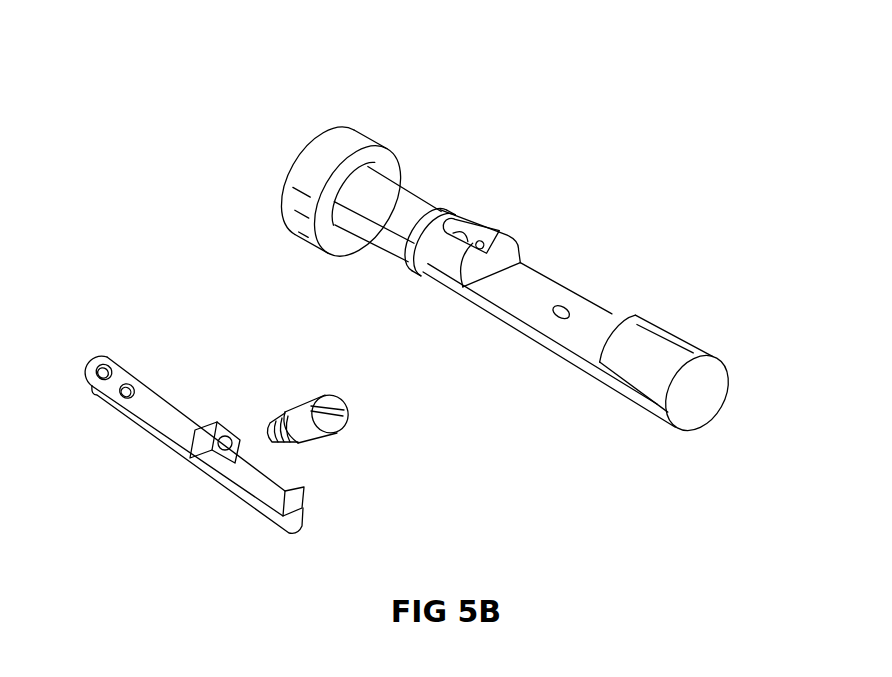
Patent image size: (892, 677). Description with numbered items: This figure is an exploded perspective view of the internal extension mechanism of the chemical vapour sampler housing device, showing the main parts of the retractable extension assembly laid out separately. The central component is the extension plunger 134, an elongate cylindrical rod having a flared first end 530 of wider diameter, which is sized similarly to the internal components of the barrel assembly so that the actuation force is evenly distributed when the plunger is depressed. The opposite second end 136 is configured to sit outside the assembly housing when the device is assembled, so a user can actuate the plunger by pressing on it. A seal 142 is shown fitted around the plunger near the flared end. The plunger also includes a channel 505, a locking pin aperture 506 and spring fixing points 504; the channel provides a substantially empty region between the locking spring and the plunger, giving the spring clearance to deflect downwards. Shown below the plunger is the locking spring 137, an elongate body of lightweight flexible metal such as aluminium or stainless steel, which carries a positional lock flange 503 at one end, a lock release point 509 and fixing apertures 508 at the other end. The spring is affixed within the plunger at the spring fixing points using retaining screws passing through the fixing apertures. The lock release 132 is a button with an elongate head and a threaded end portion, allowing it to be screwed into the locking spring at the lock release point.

The flared first end 530 is at (345, 135).
The seal 142 is at (436, 206).
The spring fixing points 504 is at (473, 240).
The channel 505 is at (515, 297).
The extension plunger 134 is at (667, 330).
The second end 136 is at (698, 385).
The locking pin aperture 506 is at (552, 313).
The lock release 132 is at (297, 395).
The fixing apertures 508 is at (113, 398).
The locking spring 137 is at (150, 430).
The lock release point 509 is at (210, 453).
The positional lock flange 503 is at (288, 508).